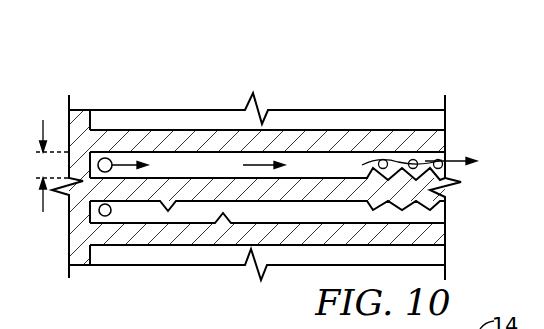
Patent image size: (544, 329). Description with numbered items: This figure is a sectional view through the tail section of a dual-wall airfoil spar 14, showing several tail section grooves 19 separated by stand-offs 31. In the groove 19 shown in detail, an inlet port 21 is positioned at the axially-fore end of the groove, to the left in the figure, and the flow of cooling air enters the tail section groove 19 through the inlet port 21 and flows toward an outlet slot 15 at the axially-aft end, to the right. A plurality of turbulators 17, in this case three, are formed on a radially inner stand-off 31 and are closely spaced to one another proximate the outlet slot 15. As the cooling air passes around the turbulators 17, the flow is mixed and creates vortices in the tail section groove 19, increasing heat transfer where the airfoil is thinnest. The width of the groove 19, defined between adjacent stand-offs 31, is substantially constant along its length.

The spar 14 is at (440, 87).
The outlet slot 15 is at (430, 155).
The turbulator 17 is at (360, 167).
The tail section groove 19 is at (195, 163).
The inlet port 21 is at (105, 157).
The stand-off 31 is at (260, 188).